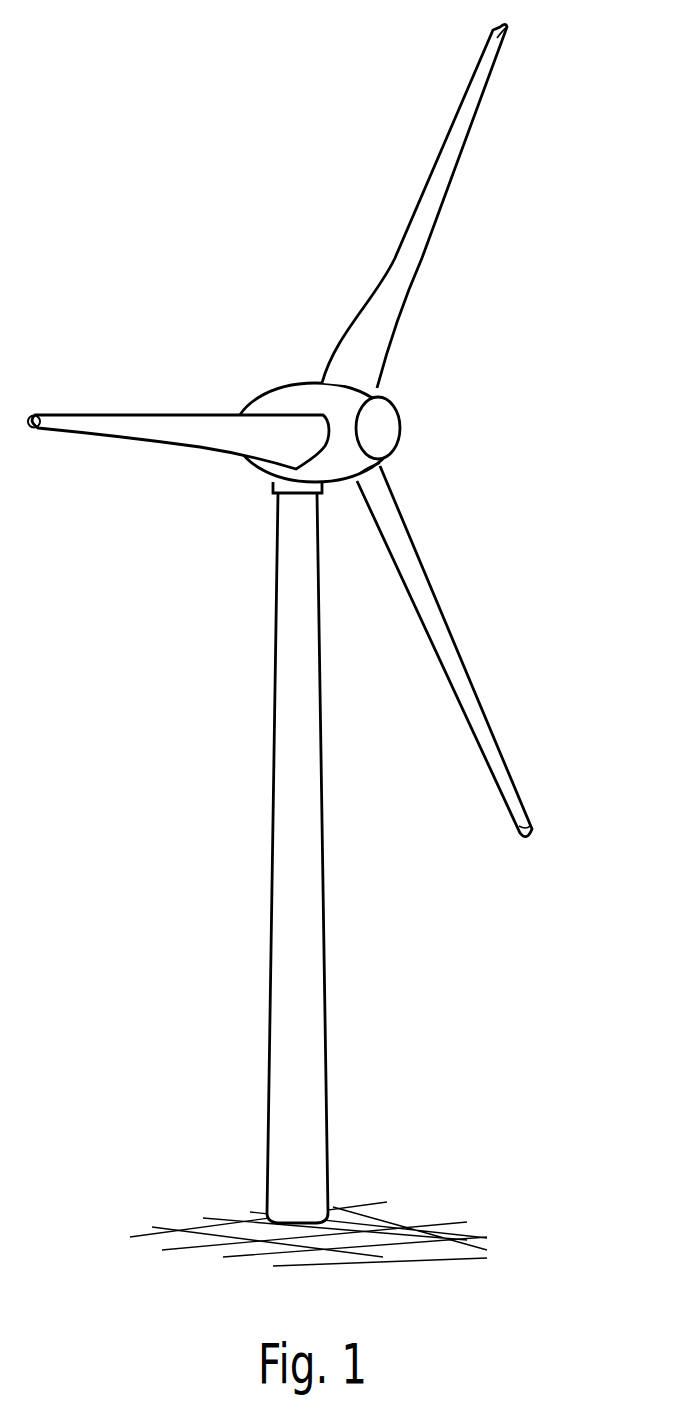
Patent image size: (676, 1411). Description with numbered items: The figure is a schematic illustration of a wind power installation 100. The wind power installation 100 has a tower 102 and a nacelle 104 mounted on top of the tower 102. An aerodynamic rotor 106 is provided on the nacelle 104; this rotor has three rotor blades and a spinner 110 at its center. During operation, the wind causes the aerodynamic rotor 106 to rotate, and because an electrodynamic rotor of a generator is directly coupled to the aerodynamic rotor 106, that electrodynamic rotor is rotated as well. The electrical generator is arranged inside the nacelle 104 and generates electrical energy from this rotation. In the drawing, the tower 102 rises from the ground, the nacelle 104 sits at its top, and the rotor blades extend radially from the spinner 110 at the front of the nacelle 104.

The wind power installation 100 is at (210, 570).
The tower 102 is at (320, 953).
The nacelle 104 is at (282, 400).
The aerodynamic rotor 106 is at (545, 322).
The spinner 110 is at (387, 427).